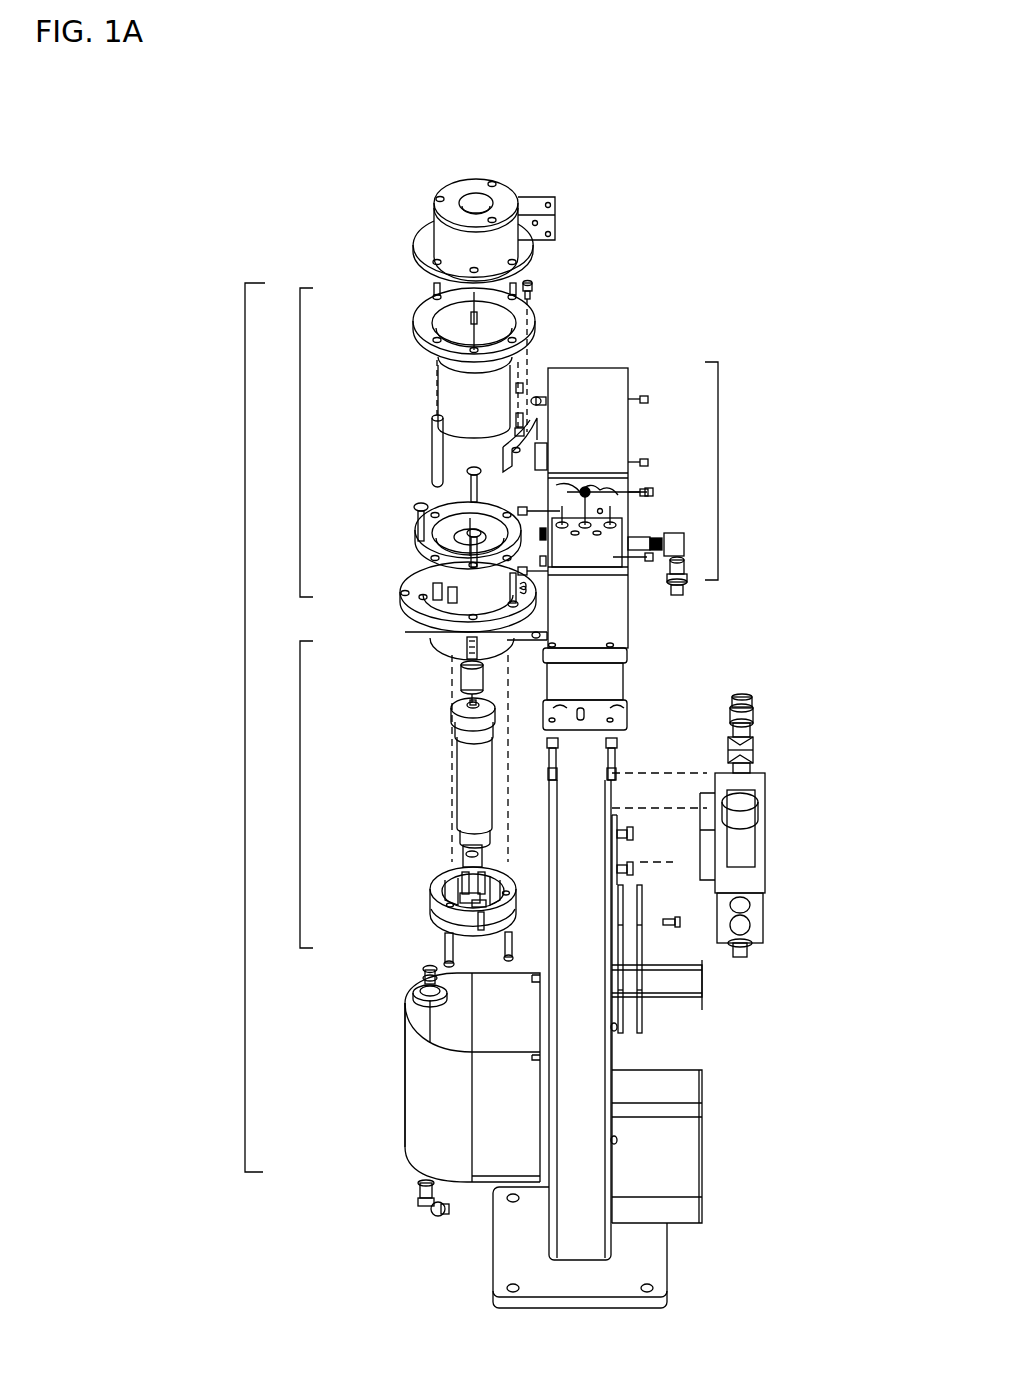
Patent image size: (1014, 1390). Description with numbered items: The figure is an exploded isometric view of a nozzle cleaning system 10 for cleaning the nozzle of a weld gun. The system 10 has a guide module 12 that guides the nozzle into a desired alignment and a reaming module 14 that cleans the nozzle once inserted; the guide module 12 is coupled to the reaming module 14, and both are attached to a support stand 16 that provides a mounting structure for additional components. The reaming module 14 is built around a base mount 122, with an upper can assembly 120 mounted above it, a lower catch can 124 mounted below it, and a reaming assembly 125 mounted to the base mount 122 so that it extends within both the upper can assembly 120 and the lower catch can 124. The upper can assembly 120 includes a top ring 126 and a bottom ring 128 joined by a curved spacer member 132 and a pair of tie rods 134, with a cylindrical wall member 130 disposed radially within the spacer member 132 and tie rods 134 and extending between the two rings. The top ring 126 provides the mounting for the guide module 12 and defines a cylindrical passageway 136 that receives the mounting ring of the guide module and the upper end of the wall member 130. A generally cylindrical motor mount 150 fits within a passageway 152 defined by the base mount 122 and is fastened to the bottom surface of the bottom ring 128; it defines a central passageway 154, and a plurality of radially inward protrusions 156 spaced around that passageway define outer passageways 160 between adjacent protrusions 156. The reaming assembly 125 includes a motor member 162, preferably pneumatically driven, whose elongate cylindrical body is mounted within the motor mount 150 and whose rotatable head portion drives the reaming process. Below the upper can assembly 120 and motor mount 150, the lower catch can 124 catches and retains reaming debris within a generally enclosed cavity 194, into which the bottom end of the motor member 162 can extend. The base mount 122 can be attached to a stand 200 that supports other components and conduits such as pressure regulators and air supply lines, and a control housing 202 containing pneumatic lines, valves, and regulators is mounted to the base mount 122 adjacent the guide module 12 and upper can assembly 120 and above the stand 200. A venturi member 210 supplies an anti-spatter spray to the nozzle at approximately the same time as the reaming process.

The nozzle cleaning system 10 is at (545, 166).
The guide module 12 is at (406, 202).
The reaming module 14 is at (245, 727).
The support stand 16 is at (587, 952).
The upper can assembly 120 is at (300, 443).
The base mount 122 is at (417, 600).
The lower catch can 124 is at (402, 1080).
The reaming assembly 125 is at (300, 793).
The top ring 126 is at (418, 318).
The bottom ring 128 is at (425, 550).
The cylindrical wall member 130 is at (517, 377).
The curved spacer member 132 is at (527, 437).
The tie rods 134 is at (435, 417).
The cylindrical passageway 136 is at (503, 320).
The motor mount 150 is at (433, 910).
The passageway 152 is at (470, 602).
The central passageway 154 is at (483, 900).
The protrusions 156 is at (430, 883).
The outer passageways 160 is at (482, 930).
The motor member 162 is at (455, 792).
The cavity 194 is at (438, 1077).
The stand 200 is at (598, 710).
The control housing 202 is at (718, 470).
The venturi member 210 is at (460, 503).